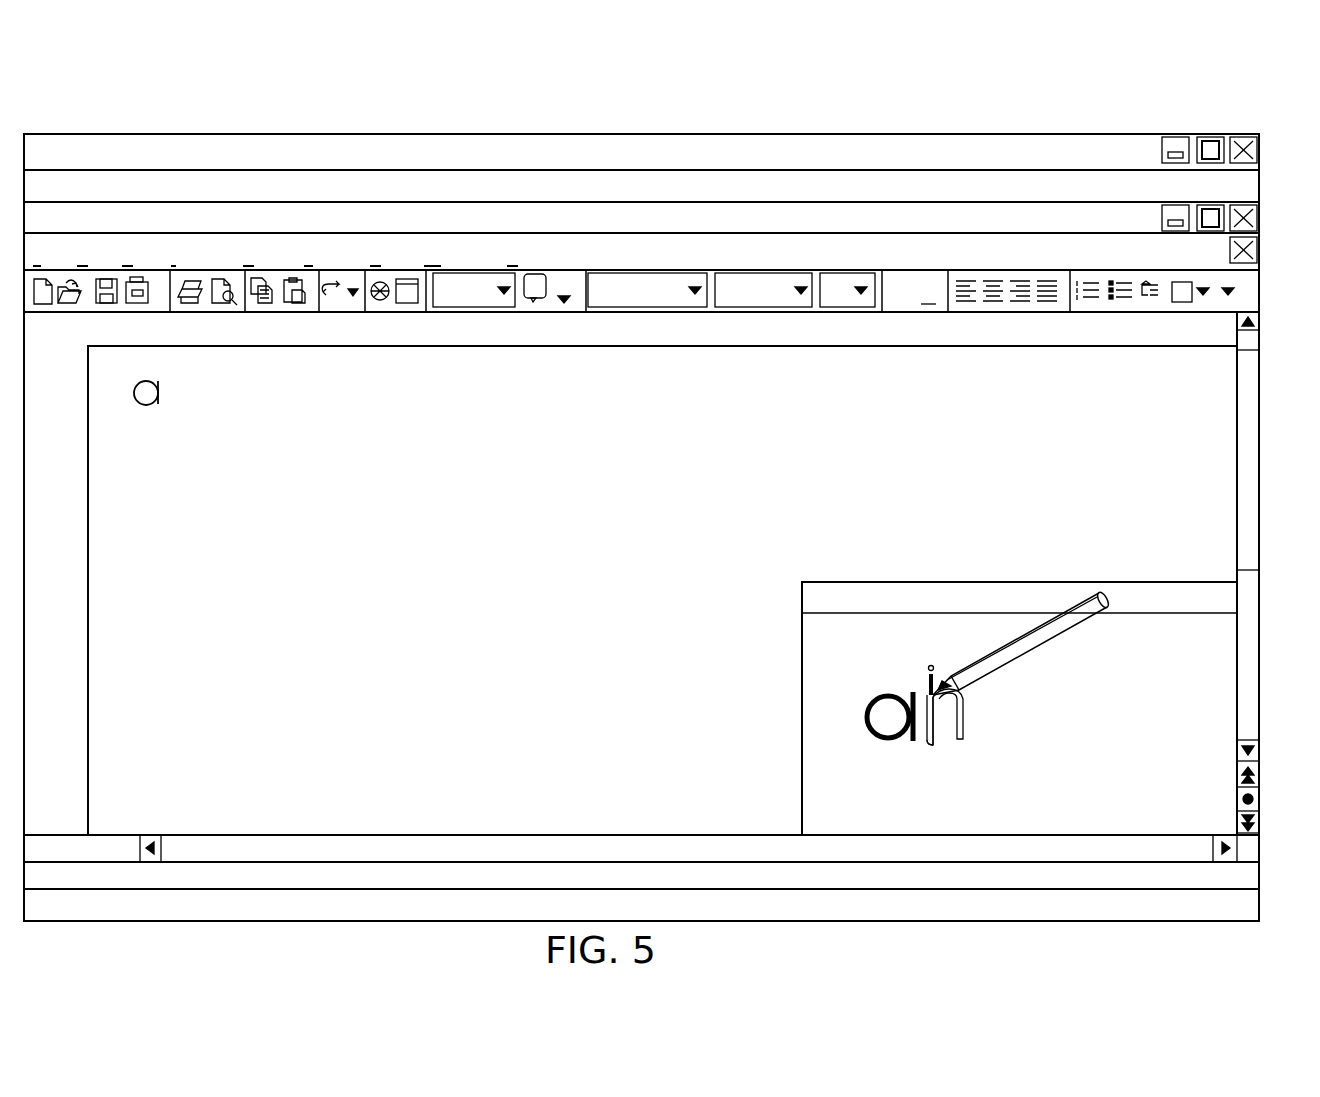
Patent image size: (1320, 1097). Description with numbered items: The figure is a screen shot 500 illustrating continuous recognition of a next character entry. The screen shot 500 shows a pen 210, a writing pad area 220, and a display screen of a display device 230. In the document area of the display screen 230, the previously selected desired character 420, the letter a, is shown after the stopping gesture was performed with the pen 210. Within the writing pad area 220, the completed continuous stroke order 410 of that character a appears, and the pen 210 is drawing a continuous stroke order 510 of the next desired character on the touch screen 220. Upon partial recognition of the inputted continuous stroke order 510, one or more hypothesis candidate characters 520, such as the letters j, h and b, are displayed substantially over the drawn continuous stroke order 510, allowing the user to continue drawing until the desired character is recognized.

The screen shot 500 is at (919, 928).
The display screen 230 is at (1259, 329).
The desired character 420 is at (148, 406).
The writing pad area 220 is at (802, 720).
The continuous stroke order 410 is at (891, 740).
The hypothesis candidate characters 520 is at (975, 717).
The continuous stroke order 510 is at (924, 679).
The pen 210 is at (1082, 634).